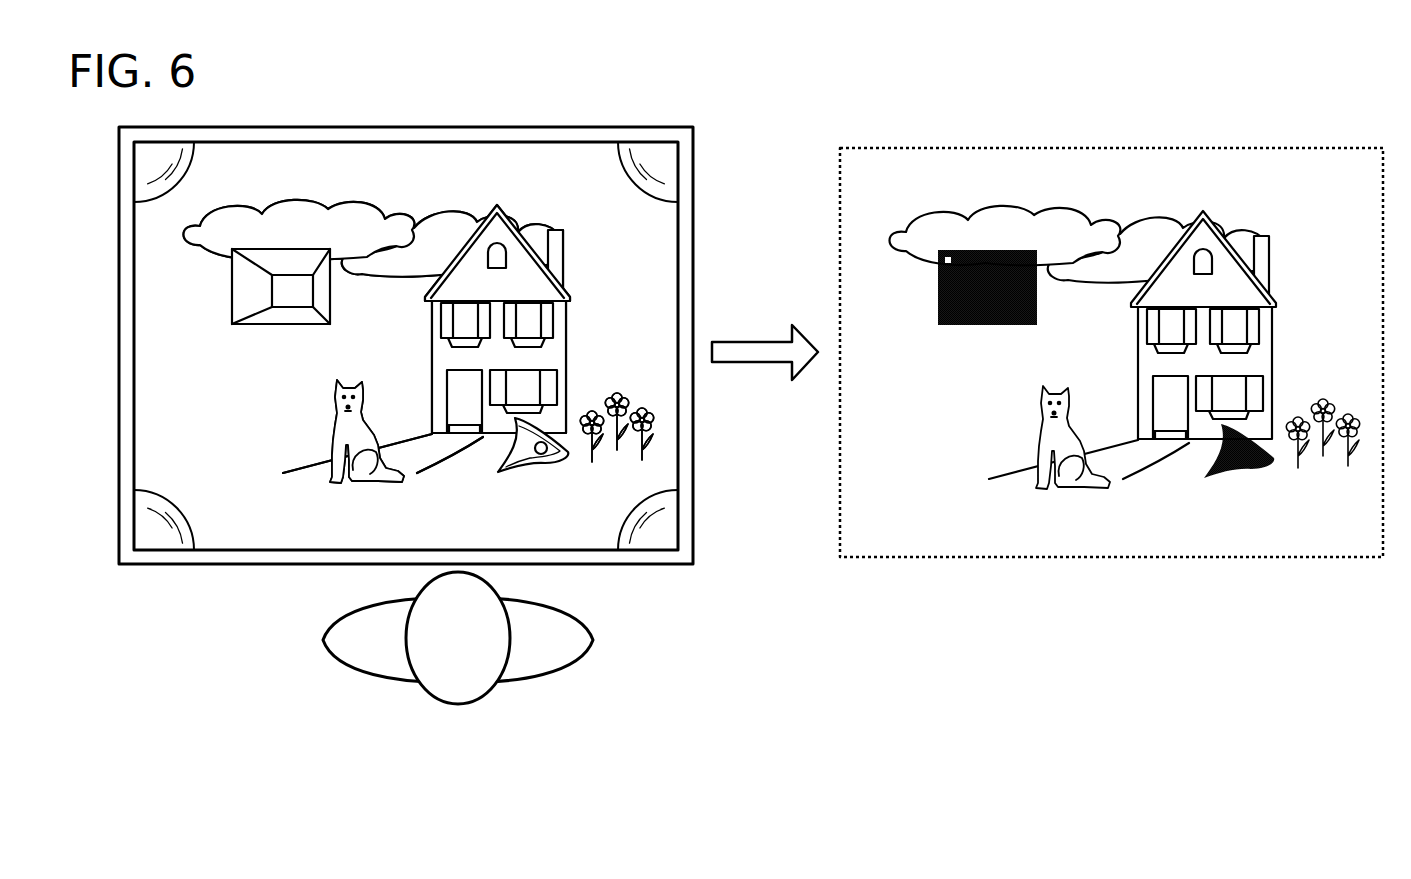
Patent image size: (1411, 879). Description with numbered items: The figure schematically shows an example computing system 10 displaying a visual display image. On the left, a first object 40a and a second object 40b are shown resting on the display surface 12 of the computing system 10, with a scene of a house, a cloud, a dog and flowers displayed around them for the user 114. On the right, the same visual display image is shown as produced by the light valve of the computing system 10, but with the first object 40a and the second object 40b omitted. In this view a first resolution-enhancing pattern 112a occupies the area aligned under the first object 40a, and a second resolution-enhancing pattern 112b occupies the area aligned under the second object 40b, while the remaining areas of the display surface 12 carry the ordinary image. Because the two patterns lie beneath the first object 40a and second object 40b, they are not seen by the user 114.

The computing system 10 is at (212, 127).
The display surface 12 is at (323, 142).
The first object 40a is at (306, 325).
The second object 40b is at (509, 474).
The first resolution-enhancing pattern 112a is at (956, 326).
The second resolution-enhancing pattern 112b is at (1230, 468).
The user 114 is at (568, 655).